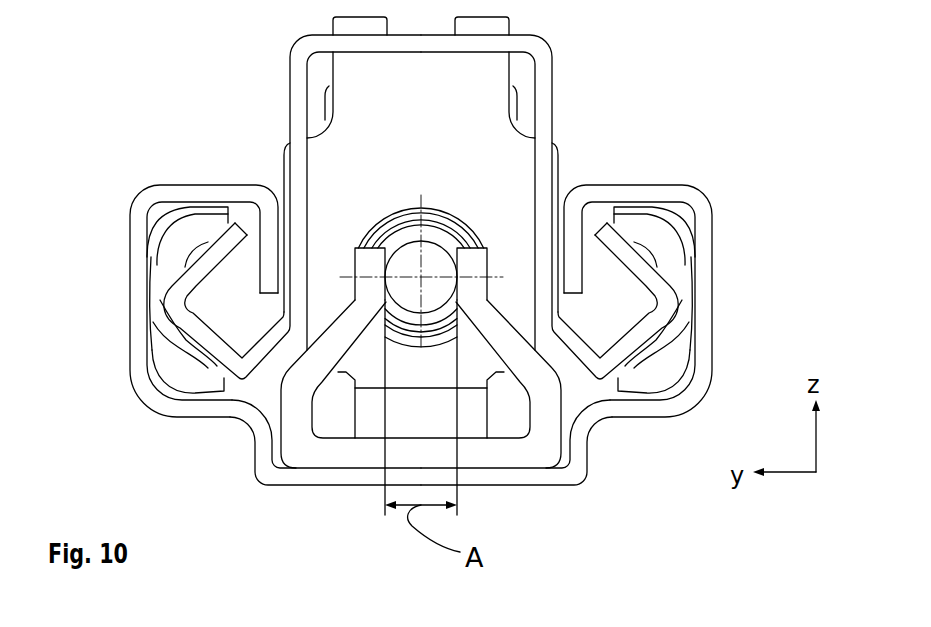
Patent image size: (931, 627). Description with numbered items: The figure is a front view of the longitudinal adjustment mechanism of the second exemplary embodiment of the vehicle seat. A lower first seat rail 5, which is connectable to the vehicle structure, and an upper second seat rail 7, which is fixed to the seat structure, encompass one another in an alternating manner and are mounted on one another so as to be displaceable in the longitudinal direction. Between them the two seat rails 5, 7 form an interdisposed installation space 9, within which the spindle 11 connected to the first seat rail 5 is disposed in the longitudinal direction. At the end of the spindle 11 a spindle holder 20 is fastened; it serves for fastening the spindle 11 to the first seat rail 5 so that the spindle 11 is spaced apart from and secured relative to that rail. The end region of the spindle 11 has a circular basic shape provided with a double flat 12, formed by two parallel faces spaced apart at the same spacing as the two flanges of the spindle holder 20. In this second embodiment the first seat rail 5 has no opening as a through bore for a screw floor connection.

The first seat rail 5 is at (173, 201).
The second seat rail 7 is at (545, 110).
The installation space 9 is at (323, 100).
The spindle 11 is at (436, 262).
The double flat 12 is at (385, 268).
The spindle holder 20 is at (540, 423).